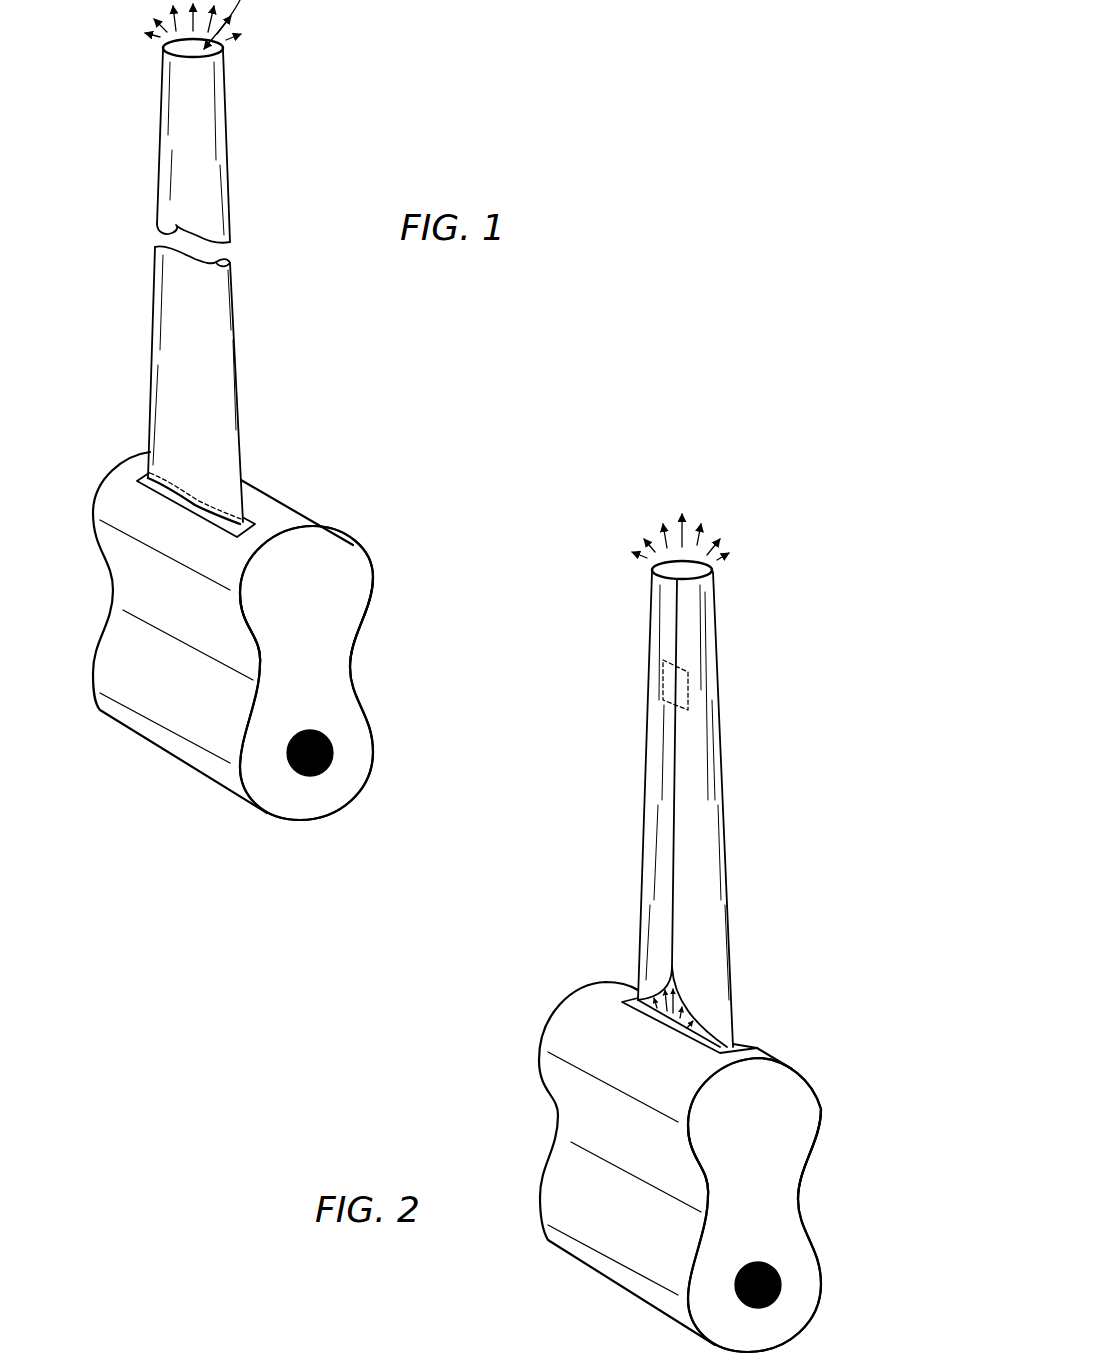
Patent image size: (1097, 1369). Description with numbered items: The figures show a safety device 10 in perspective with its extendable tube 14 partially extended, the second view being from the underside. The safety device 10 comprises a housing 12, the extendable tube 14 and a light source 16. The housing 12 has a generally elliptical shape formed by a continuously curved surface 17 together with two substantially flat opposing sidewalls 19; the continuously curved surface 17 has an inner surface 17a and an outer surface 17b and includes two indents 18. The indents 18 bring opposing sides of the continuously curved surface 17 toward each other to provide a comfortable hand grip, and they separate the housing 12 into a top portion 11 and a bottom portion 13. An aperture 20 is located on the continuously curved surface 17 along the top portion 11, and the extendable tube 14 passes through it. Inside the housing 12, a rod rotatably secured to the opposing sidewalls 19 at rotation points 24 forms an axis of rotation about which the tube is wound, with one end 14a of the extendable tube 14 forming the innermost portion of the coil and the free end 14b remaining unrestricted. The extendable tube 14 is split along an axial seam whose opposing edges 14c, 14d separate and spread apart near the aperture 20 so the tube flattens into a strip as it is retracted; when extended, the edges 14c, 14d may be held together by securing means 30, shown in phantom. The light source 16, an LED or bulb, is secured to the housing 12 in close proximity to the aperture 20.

In FIG. 1, the safety device 10 is at (74, 64).
In FIG. 2, the safety device 10 is at (838, 603).
In FIG. 1, the top portion 11 is at (316, 595).
In FIG. 2, the top portion 11 is at (764, 1127).
In FIG. 1, the housing 12 is at (241, 636).
In FIG. 2, the housing 12 is at (689, 1167).
In FIG. 1, the bottom portion 13 is at (296, 810).
In FIG. 2, the bottom portion 13 is at (744, 1342).
In FIG. 1, the extendable tube 14 is at (223, 262).
In FIG. 2, the extendable tube 14 is at (696, 771).
In FIG. 1, the one end of extendable tube 14a is at (193, 24).
In FIG. 2, the one end of extendable tube 14a is at (693, 570).
In FIG. 1, the free end of extendable tube 14b is at (223, 50).
In FIG. 2, the free end of extendable tube 14b is at (717, 572).
In FIG. 2, the opposing edge of axial seam 14c is at (660, 1000).
In FIG. 2, the opposing edge of axial seam 14d is at (683, 1003).
In FIG. 2, the light source 16 is at (698, 1025).
In FIG. 1, the continuously curved surface 17 is at (92, 494).
In FIG. 2, the continuously curved surface 17 is at (541, 1027).
In FIG. 1, the inner surface 17a is at (186, 621).
In FIG. 2, the outer surface 17b is at (635, 1154).
In FIG. 1, the indents 18 is at (352, 657).
In FIG. 2, the indents 18 is at (800, 1189).
In FIG. 1, the sidewalls 19 is at (316, 685).
In FIG. 2, the sidewalls 19 is at (764, 1217).
In FIG. 1, the aperture 20 is at (172, 506).
In FIG. 2, the aperture 20 is at (630, 1025).
In FIG. 1, the rotation points 24 is at (333, 752).
In FIG. 2, the rotation points 24 is at (781, 1284).
In FIG. 2, the securing means 30 is at (657, 681).